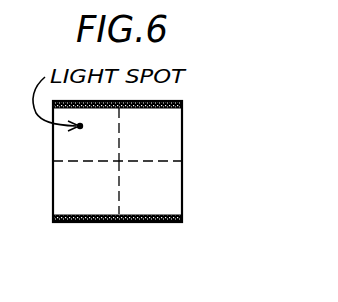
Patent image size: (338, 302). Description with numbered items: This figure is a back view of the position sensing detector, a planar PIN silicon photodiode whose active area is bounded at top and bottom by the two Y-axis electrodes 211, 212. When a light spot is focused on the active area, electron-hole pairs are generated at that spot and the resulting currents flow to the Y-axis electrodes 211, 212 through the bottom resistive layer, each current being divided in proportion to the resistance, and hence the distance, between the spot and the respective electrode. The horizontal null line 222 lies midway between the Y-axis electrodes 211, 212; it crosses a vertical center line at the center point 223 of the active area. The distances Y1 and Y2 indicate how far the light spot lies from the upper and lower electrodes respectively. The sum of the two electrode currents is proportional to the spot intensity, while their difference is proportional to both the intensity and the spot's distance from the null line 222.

The Y-axis electrode 211 is at (164, 100).
The Y-axis electrode 212 is at (133, 222).
The null line 222 is at (153, 162).
The center of light receiving surface 223 is at (115, 158).
The distance from light spot to upper electrode Y1 is at (124, 109).
The distance from light spot to lower electrode Y2 is at (83, 222).